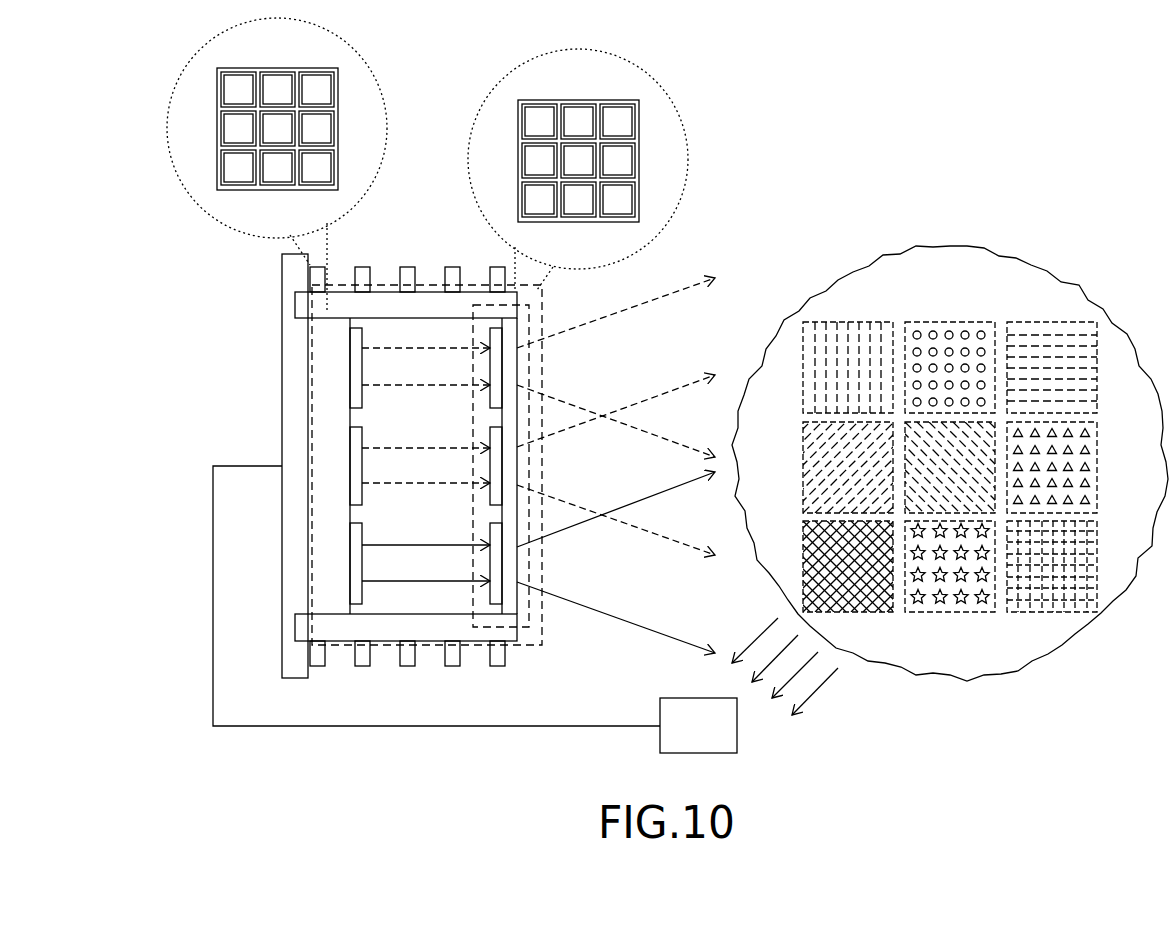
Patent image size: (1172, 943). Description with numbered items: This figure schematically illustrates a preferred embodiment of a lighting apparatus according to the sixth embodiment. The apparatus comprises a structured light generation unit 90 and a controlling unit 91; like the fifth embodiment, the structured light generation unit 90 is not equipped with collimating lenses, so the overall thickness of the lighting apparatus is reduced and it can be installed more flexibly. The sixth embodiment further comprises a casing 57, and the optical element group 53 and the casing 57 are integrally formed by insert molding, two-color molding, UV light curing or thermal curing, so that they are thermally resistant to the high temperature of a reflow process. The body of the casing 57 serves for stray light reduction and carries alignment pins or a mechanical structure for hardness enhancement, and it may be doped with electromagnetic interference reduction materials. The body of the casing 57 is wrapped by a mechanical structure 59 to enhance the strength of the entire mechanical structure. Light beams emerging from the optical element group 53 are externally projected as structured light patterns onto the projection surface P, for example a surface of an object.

The optical element group 53 is at (523, 347).
The casing 57 is at (438, 298).
The mechanical structure 59 is at (508, 655).
The structured light generation unit 90 is at (543, 613).
The controlling unit 91 is at (293, 387).
The projection surface P is at (1053, 297).